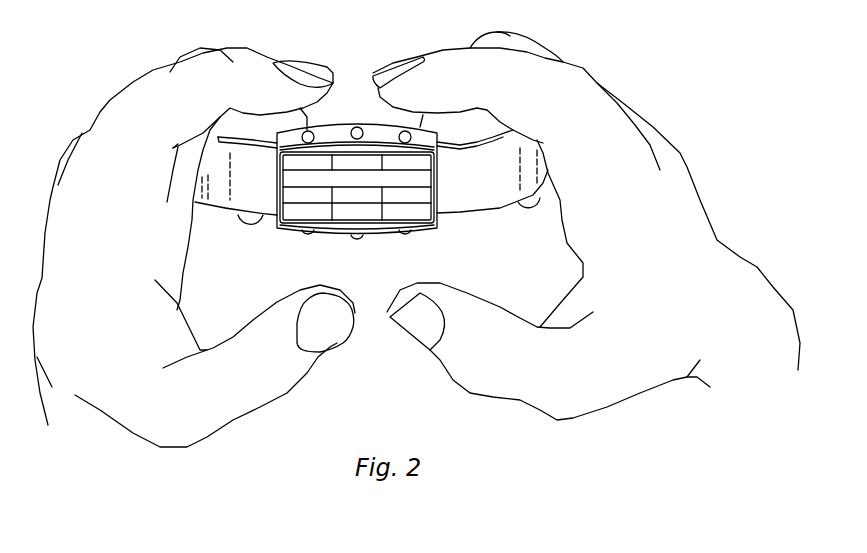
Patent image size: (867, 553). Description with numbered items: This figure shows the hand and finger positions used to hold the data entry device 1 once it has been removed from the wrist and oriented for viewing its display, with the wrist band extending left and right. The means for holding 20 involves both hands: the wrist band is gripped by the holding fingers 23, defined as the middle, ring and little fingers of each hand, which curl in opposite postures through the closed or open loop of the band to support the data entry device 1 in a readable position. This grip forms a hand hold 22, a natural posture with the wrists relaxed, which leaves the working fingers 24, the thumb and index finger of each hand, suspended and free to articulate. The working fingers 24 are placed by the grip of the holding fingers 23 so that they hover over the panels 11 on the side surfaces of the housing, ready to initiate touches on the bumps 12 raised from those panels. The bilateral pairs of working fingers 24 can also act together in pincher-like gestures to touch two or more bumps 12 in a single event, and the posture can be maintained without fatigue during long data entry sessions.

The data entry device 1 is at (371, 162).
The panel 11 is at (337, 238).
The bumps 12 is at (357, 125).
The means for holding 20 is at (403, 342).
The hand hold 22 is at (578, 220).
The holding fingers 23 is at (253, 223).
The working fingers 24 is at (202, 80).